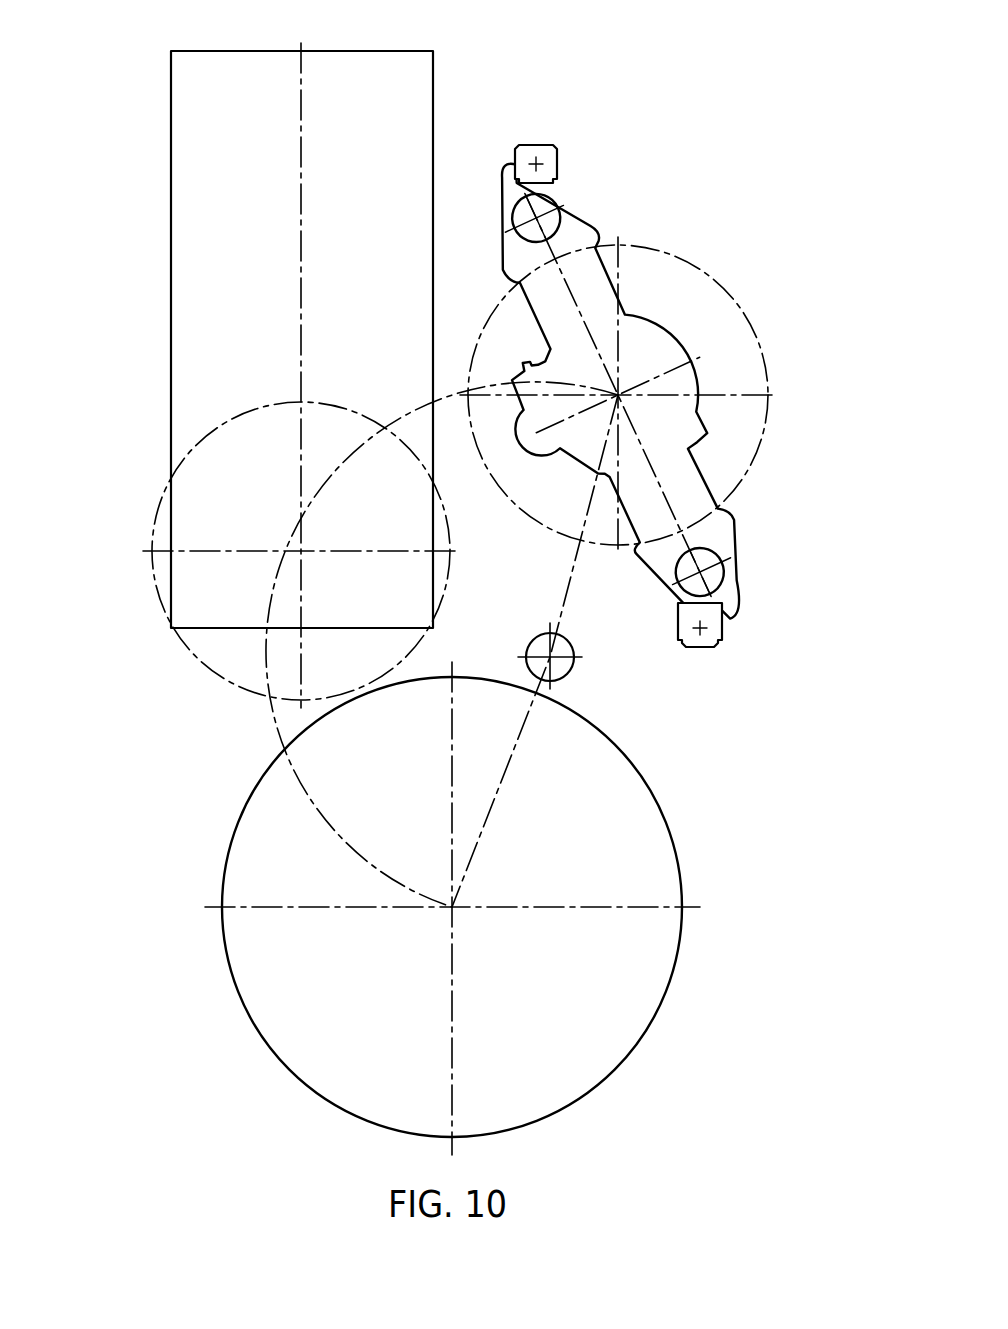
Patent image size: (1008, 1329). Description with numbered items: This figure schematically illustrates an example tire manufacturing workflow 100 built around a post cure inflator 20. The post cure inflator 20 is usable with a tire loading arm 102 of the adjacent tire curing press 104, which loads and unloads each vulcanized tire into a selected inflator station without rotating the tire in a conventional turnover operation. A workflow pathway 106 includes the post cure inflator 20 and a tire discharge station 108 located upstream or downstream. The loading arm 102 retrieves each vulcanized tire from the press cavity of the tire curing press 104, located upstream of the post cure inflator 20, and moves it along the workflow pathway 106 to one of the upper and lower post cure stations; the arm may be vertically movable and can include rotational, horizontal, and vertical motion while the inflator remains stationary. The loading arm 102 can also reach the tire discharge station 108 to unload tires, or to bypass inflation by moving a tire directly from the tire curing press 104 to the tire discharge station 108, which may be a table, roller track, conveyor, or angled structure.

The tire manufacturing workflow 100 is at (118, 408).
The tire discharge station 108 is at (227, 103).
The post cure inflator 20 is at (853, 500).
The tire loading arm 102 is at (572, 671).
The workflow pathway 106 is at (283, 715).
The tire curing press 104 is at (222, 933).